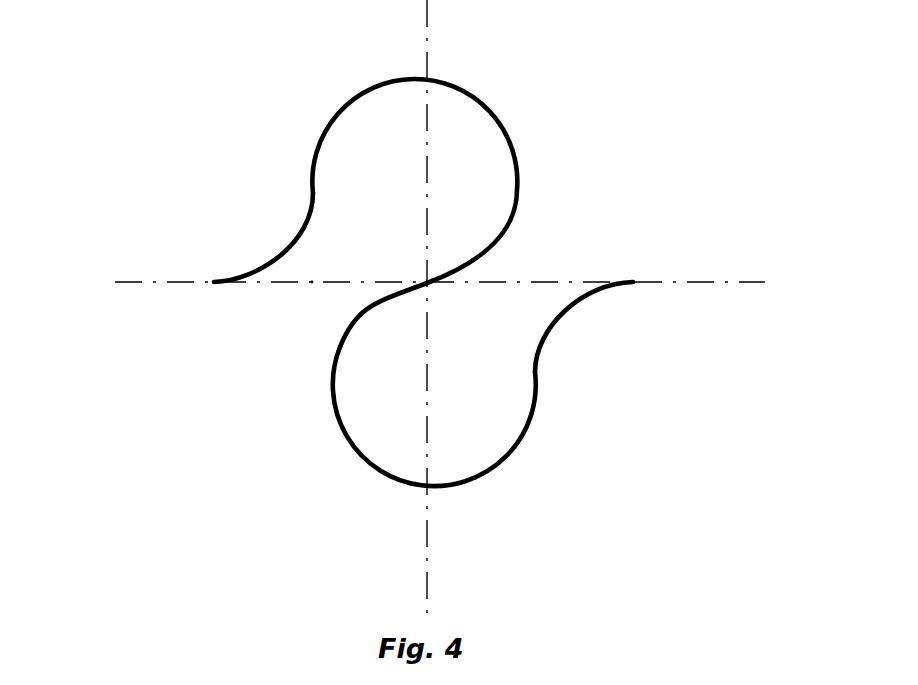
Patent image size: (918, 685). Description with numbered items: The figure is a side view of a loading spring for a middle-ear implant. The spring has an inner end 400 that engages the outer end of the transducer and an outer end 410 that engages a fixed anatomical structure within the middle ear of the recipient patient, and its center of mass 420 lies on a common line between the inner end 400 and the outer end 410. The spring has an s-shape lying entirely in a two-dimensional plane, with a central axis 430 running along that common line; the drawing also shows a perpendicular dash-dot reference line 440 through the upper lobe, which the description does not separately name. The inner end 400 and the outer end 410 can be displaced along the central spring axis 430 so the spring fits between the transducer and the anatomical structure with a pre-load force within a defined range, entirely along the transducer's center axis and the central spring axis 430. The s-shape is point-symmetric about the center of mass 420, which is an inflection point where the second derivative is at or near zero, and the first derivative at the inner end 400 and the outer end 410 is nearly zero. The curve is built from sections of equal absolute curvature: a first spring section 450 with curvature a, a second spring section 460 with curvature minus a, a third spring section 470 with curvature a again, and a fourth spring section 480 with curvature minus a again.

The inner end 400 is at (200, 277).
The outer end 410 is at (646, 274).
The center of mass 420 is at (421, 285).
The central axis 430 is at (309, 284).
The vertical axis of symmetry 440 is at (421, 160).
The first spring section 450 is at (276, 248).
The second spring section 460 is at (496, 105).
The third spring section 470 is at (368, 469).
The fourth spring section 480 is at (601, 295).